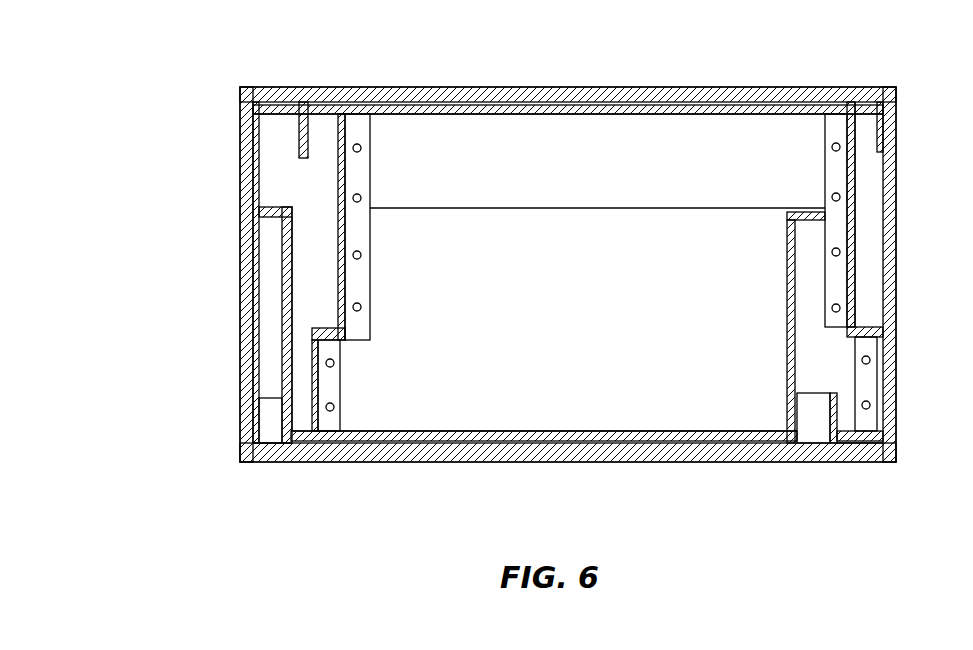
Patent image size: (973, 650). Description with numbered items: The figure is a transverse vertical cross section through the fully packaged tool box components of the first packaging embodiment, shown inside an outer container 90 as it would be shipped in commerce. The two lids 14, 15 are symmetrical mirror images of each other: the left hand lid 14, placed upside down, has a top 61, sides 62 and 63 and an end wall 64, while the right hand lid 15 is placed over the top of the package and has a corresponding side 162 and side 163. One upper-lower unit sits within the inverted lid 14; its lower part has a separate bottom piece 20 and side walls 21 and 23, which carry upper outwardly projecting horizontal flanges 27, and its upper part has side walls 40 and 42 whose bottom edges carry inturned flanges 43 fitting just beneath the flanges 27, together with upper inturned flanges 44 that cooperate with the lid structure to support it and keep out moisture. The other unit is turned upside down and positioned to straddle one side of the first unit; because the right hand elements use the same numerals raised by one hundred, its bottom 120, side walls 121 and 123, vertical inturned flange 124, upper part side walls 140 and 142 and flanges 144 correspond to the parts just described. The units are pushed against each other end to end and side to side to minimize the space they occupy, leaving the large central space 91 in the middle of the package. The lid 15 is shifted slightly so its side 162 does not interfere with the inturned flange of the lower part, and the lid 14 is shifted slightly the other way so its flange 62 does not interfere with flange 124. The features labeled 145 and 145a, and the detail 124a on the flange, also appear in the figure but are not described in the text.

The outer container 90 is at (722, 88).
The right hand lid 15 is at (638, 90).
The top 61 is at (428, 463).
The side wall 40 is at (247, 172).
The side wall 140 is at (893, 370).
The side wall 163 is at (887, 108).
The upper inturned flanges 44 is at (272, 105).
The bottom 120 is at (632, 114).
The side 162 is at (303, 102).
The inturned flanges 43 is at (252, 233).
The upper outwardly projecting horizontal flanges 27 is at (268, 210).
The side wall 142 is at (305, 340).
The side wall 21 is at (283, 302).
The side wall 123 is at (342, 256).
The flange 124 is at (368, 290).
The mounting plate holes 124a is at (362, 256).
The lower mounting plate 145 is at (345, 394).
The lower mounting plate holes 145a is at (343, 367).
The large central space 91 is at (580, 309).
The side wall 42 is at (822, 146).
The side wall 121 is at (858, 236).
The side wall 23 is at (787, 292).
The flanges 144 is at (617, 432).
The bottom piece 20 is at (528, 432).
The side 63 is at (245, 435).
The end wall 64 is at (818, 450).
The side wall 62 is at (858, 448).
The left hand lid 14 is at (306, 466).